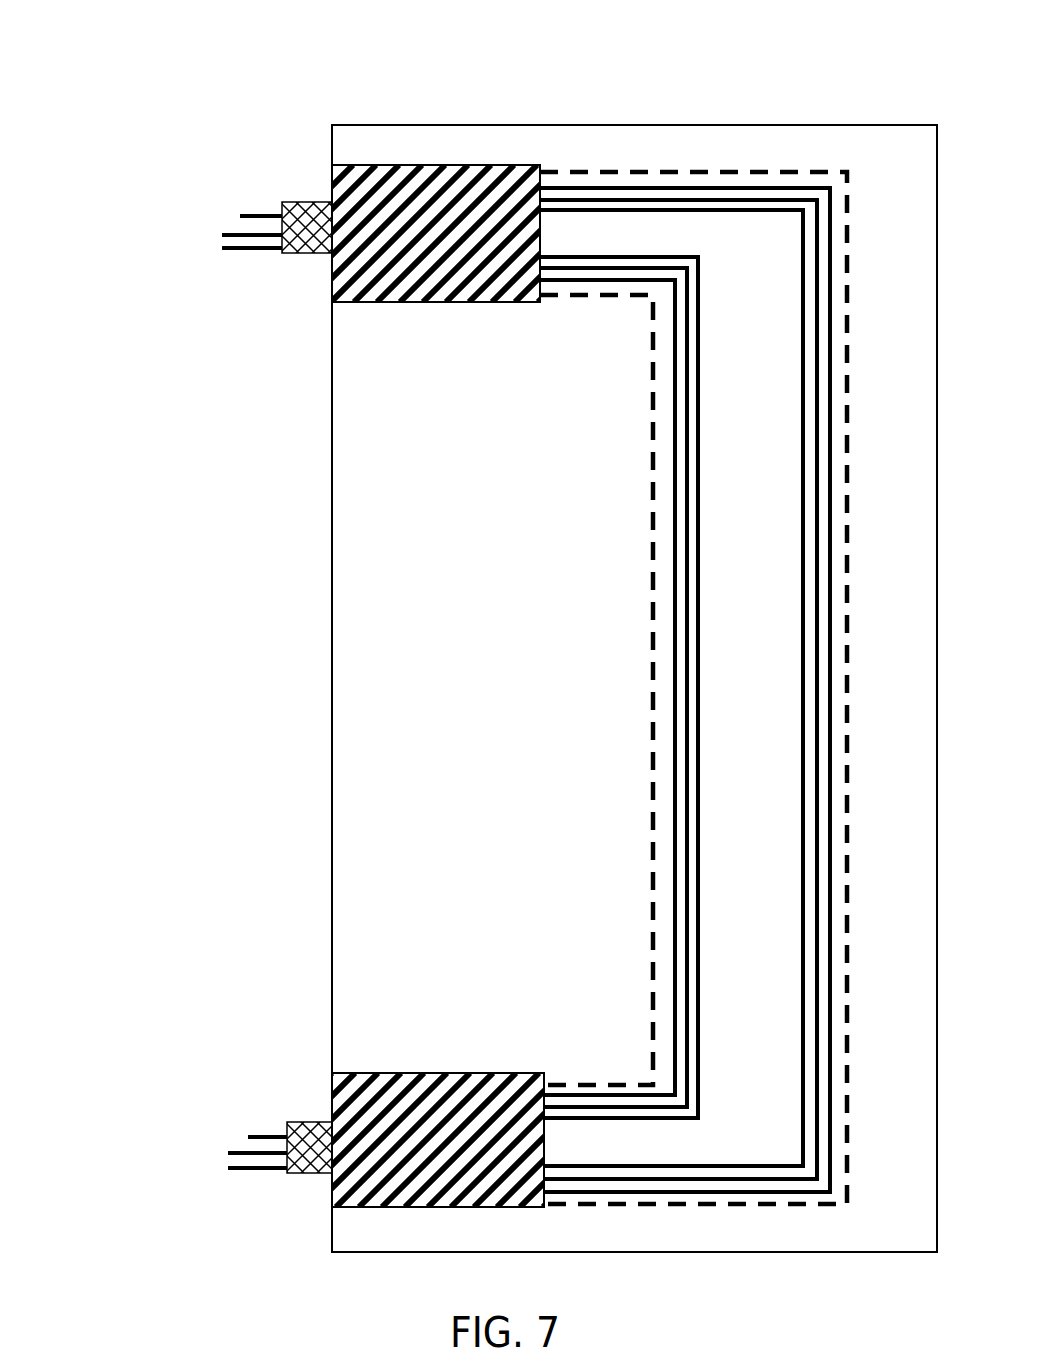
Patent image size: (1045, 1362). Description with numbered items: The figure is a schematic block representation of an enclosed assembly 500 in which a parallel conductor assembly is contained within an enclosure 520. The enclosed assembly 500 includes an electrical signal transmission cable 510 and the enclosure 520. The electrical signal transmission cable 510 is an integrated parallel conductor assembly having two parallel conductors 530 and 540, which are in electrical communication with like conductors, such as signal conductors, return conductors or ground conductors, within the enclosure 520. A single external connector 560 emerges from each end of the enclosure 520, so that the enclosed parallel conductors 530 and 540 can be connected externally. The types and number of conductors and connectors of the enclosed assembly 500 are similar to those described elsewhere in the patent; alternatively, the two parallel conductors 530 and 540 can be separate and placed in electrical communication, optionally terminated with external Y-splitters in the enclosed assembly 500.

The enclosed assembly 500 is at (92, 33).
The electrical signal transmission cable 510 is at (643, 782).
The enclosure 520 is at (318, 780).
The parallel conductor 530 is at (795, 596).
The parallel conductor 540 is at (712, 815).
The external connector 560 is at (287, 257).